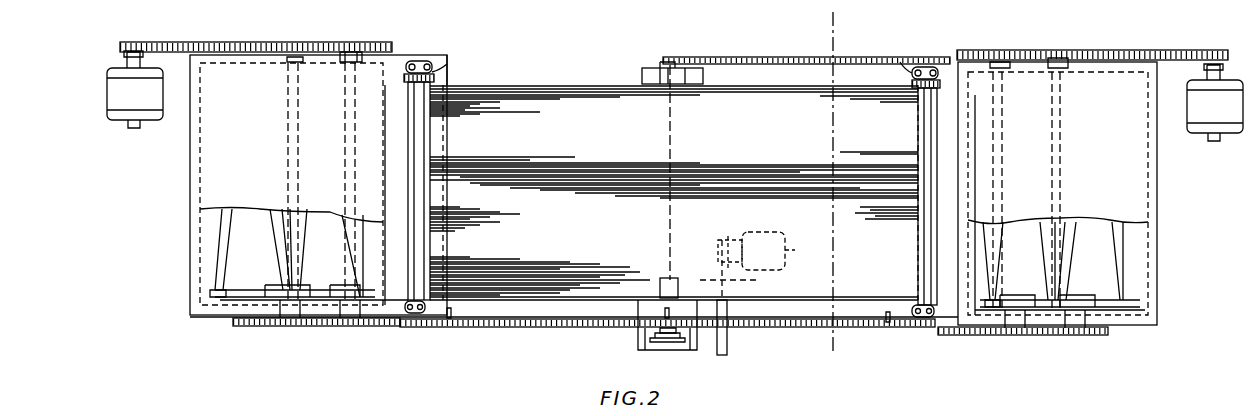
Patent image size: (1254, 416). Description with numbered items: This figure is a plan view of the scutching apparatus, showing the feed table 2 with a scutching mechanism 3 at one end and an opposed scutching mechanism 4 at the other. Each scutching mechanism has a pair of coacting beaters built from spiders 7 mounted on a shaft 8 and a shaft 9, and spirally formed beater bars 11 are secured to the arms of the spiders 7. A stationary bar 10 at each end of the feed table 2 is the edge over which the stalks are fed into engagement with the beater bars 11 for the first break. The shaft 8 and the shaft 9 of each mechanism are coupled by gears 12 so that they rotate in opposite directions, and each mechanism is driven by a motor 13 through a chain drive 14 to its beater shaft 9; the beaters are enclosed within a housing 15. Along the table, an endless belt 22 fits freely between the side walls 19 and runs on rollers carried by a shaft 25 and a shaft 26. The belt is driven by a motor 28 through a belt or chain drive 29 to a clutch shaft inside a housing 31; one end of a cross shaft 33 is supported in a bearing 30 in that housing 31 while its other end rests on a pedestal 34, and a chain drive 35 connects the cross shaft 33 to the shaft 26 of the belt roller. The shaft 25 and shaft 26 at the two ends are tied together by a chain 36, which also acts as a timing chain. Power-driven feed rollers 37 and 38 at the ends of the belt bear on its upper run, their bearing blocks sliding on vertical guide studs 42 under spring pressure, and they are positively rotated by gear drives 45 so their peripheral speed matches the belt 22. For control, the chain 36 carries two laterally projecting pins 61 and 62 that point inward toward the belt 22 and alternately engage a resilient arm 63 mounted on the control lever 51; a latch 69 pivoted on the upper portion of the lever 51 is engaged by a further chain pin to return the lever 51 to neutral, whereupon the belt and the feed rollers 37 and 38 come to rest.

The feed table 2 is at (605, 78).
The scutching mechanism 3 is at (212, 188).
The scutching mechanism 4 is at (1128, 197).
The spiders 7 is at (252, 288).
The shaft 8 is at (290, 223).
The shaft 9 is at (347, 250).
The stationary bar 10 is at (372, 234).
The beater bars 11 is at (276, 252).
The gears 12 is at (310, 328).
The motors 13 is at (113, 98).
The chain drives 14 is at (233, 24).
The housing 15 is at (200, 244).
The side walls 19 is at (573, 87).
The endless belt 22 is at (584, 270).
The shaft 25 is at (411, 327).
The shaft 26 is at (925, 337).
The motor 28 is at (769, 254).
The belt or chain drive 29 is at (741, 270).
The bearing 30 is at (680, 290).
The housing 31 is at (645, 344).
The cross shaft 33 is at (665, 146).
The pedestal 34 is at (658, 67).
The chain drive 35 is at (793, 51).
The chain 36 is at (788, 344).
The feed roller 37 is at (425, 136).
The feed roller 38 is at (920, 148).
The guide studs 42 is at (430, 62).
The gear drives 45 is at (445, 76).
The control lever 51 is at (678, 342).
The pin 61 is at (452, 313).
The pin 62 is at (886, 318).
The resilient arm 63 is at (663, 314).
The latch 69 is at (658, 344).